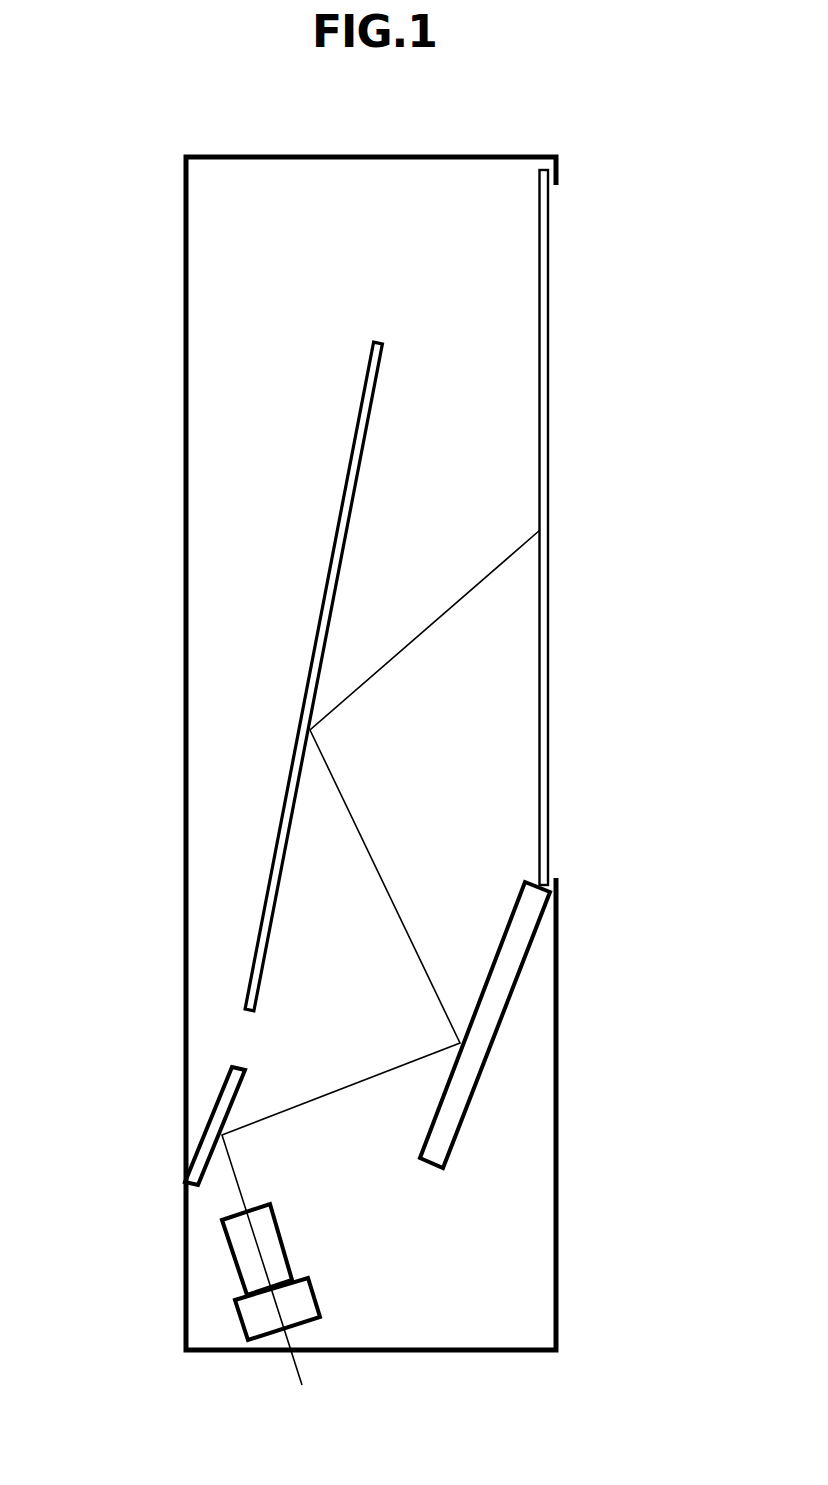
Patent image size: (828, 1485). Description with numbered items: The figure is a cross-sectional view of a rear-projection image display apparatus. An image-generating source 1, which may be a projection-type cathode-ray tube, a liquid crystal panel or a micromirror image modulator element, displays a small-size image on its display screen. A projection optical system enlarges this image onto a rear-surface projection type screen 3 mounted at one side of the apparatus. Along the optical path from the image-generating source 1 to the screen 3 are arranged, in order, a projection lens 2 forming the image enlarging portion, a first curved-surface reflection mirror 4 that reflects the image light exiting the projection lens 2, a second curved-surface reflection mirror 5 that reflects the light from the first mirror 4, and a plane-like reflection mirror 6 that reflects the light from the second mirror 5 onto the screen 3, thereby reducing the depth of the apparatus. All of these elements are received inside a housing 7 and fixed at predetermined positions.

The image-generating source 1 is at (237, 1315).
The projection lens 2 is at (233, 1248).
The rear-surface projection type screen 3 is at (549, 295).
The first curved-surface reflection mirror 4 is at (216, 1110).
The second curved-surface reflection mirror 5 is at (512, 993).
The plane-like reflection mirror 6 is at (264, 905).
The housing 7 is at (184, 690).